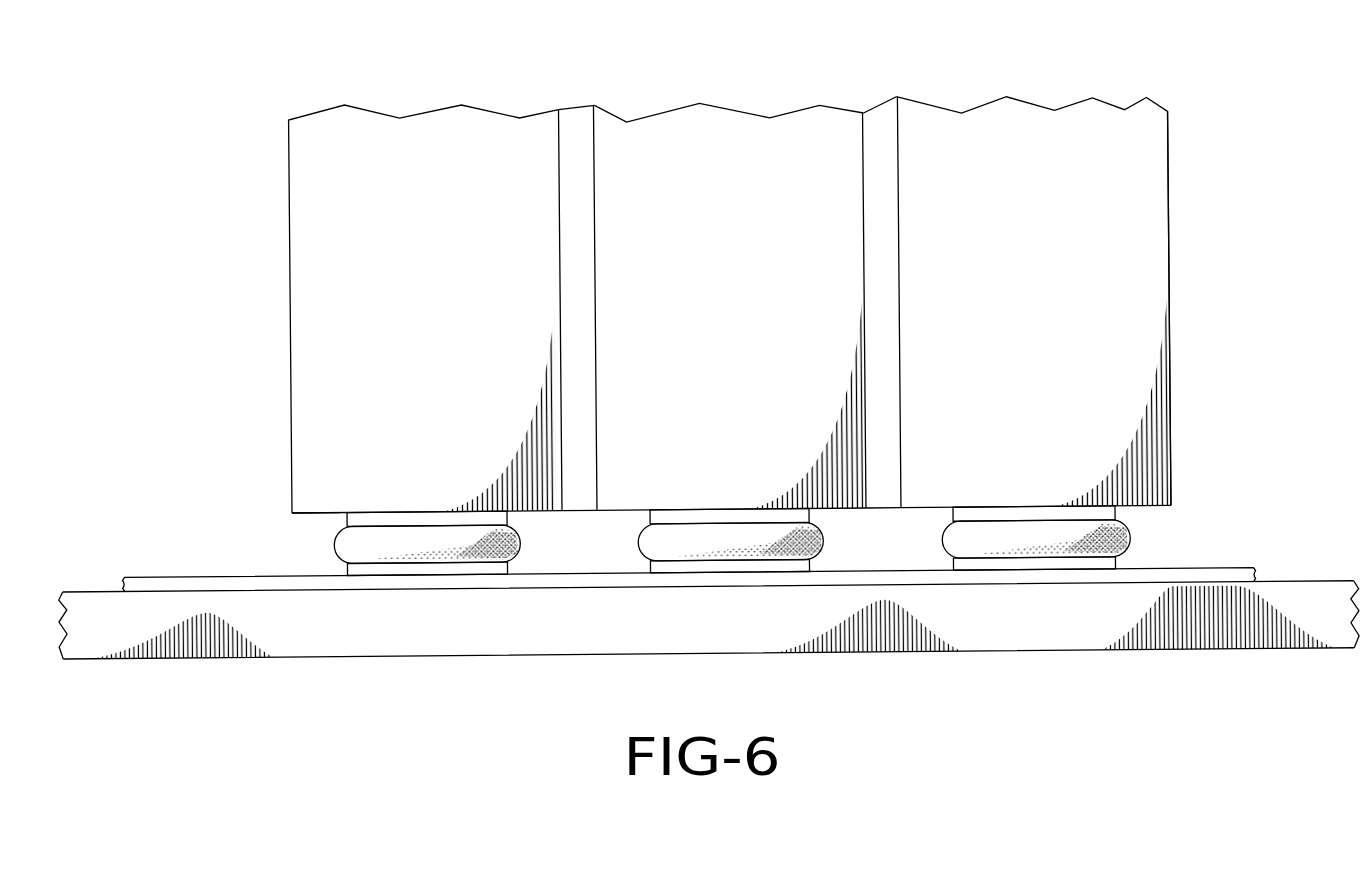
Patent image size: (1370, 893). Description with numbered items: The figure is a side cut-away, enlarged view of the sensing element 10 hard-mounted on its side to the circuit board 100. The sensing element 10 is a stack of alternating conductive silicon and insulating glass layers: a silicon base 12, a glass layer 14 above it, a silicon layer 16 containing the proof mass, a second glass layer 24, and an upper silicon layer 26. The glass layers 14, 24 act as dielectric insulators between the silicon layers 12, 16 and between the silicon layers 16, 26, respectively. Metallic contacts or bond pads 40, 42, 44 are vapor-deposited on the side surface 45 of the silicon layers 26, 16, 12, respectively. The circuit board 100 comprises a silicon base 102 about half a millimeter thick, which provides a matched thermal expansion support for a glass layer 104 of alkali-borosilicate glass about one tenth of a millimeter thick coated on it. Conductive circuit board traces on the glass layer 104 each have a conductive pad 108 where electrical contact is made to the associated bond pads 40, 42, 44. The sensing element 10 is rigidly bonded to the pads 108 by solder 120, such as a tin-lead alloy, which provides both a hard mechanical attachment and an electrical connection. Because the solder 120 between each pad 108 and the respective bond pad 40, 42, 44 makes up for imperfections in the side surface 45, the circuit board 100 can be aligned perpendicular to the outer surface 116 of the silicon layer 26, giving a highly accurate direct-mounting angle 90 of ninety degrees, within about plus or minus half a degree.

The sensing element 10 is at (715, 282).
The base 12 is at (425, 308).
The glass layer 14 is at (581, 120).
The silicon layer 16 is at (730, 306).
The glass layer 24 is at (877, 123).
The silicon layer 26 is at (1033, 300).
The metallic contact 40 is at (428, 517).
The metallic contact 42 is at (731, 518).
The metallic contact 44 is at (1034, 517).
The side surface 45 is at (312, 526).
The 90° direct-mounting angle 90 is at (1318, 572).
The circuit board 100 is at (705, 594).
The silicon base 102 is at (310, 634).
The glass layer 104 is at (160, 584).
The conductive pad 108 is at (428, 571).
The outer surface 116 is at (1171, 200).
The solder 120 is at (348, 553).